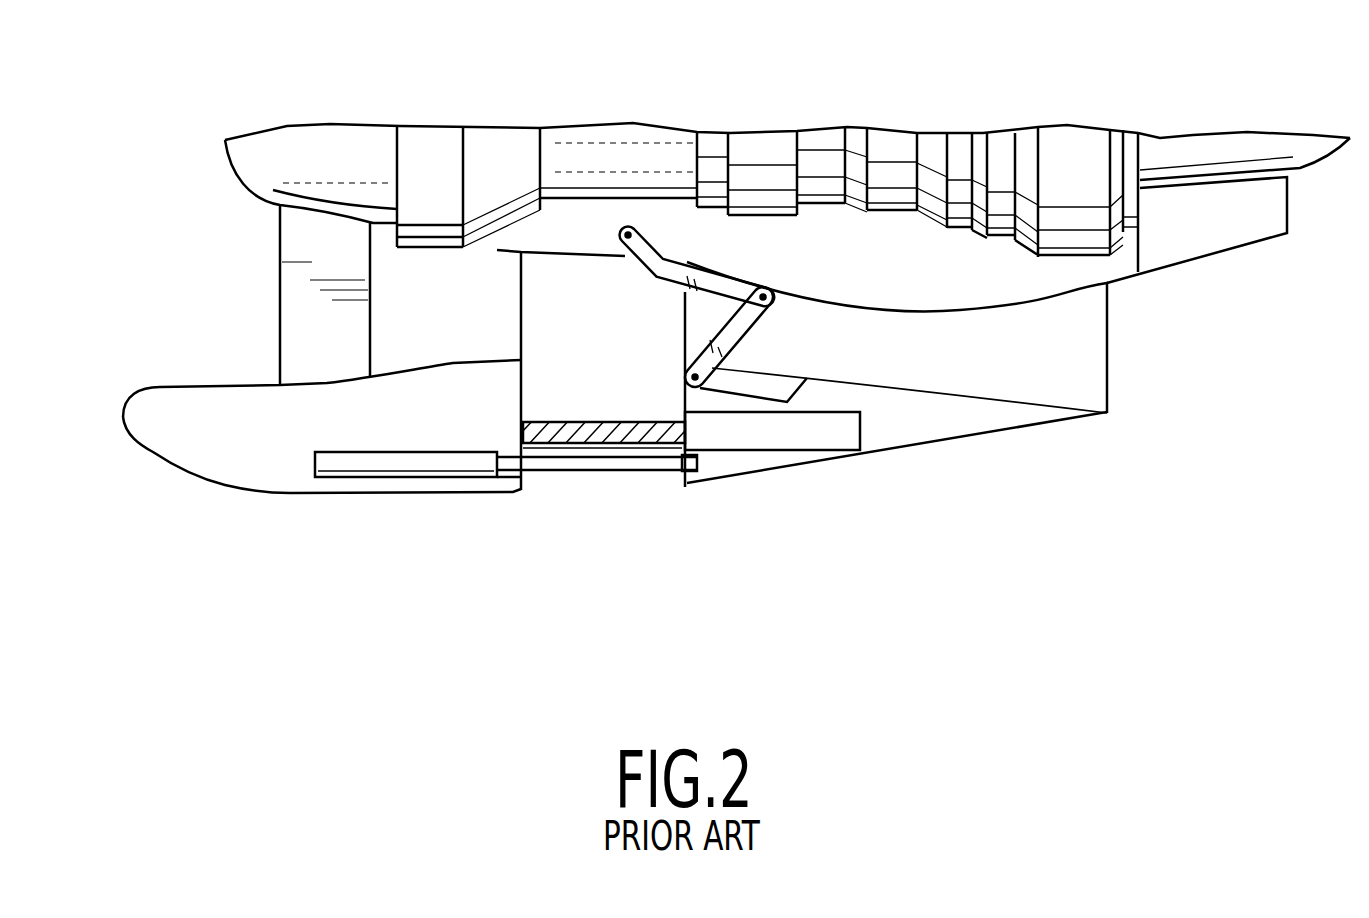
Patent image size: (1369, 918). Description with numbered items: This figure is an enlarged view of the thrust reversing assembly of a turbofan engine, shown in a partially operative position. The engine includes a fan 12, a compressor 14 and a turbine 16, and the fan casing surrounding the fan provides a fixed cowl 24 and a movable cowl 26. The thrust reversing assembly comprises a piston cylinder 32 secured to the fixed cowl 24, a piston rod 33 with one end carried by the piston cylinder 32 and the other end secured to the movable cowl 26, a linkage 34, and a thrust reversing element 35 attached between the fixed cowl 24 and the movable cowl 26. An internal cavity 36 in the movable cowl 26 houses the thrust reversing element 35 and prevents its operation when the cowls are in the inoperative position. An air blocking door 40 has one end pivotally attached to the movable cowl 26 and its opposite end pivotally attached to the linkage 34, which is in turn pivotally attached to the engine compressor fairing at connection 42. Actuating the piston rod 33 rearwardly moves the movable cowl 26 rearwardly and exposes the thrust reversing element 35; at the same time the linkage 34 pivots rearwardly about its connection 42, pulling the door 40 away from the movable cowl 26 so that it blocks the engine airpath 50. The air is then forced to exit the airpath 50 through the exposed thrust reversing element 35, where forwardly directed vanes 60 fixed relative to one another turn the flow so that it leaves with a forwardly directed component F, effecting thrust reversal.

The fan 12 is at (317, 315).
The compressor 14 is at (373, 140).
The turbine 16 is at (1202, 153).
The fixed cowl 24 is at (205, 455).
The movable cowl 26 is at (940, 420).
The piston cylinder 32 is at (367, 465).
The piston rod 33 is at (612, 470).
The linkage 34 is at (653, 283).
The thrust reversing element 35 is at (600, 418).
The internal cavity 36 is at (768, 450).
The air blocking door 40 is at (735, 340).
The connection to engine compressor fairing 42 is at (640, 227).
The engine airpath 50 is at (573, 297).
The forwardly directed vanes 60 is at (633, 440).
The forwardly directed component F is at (652, 393).